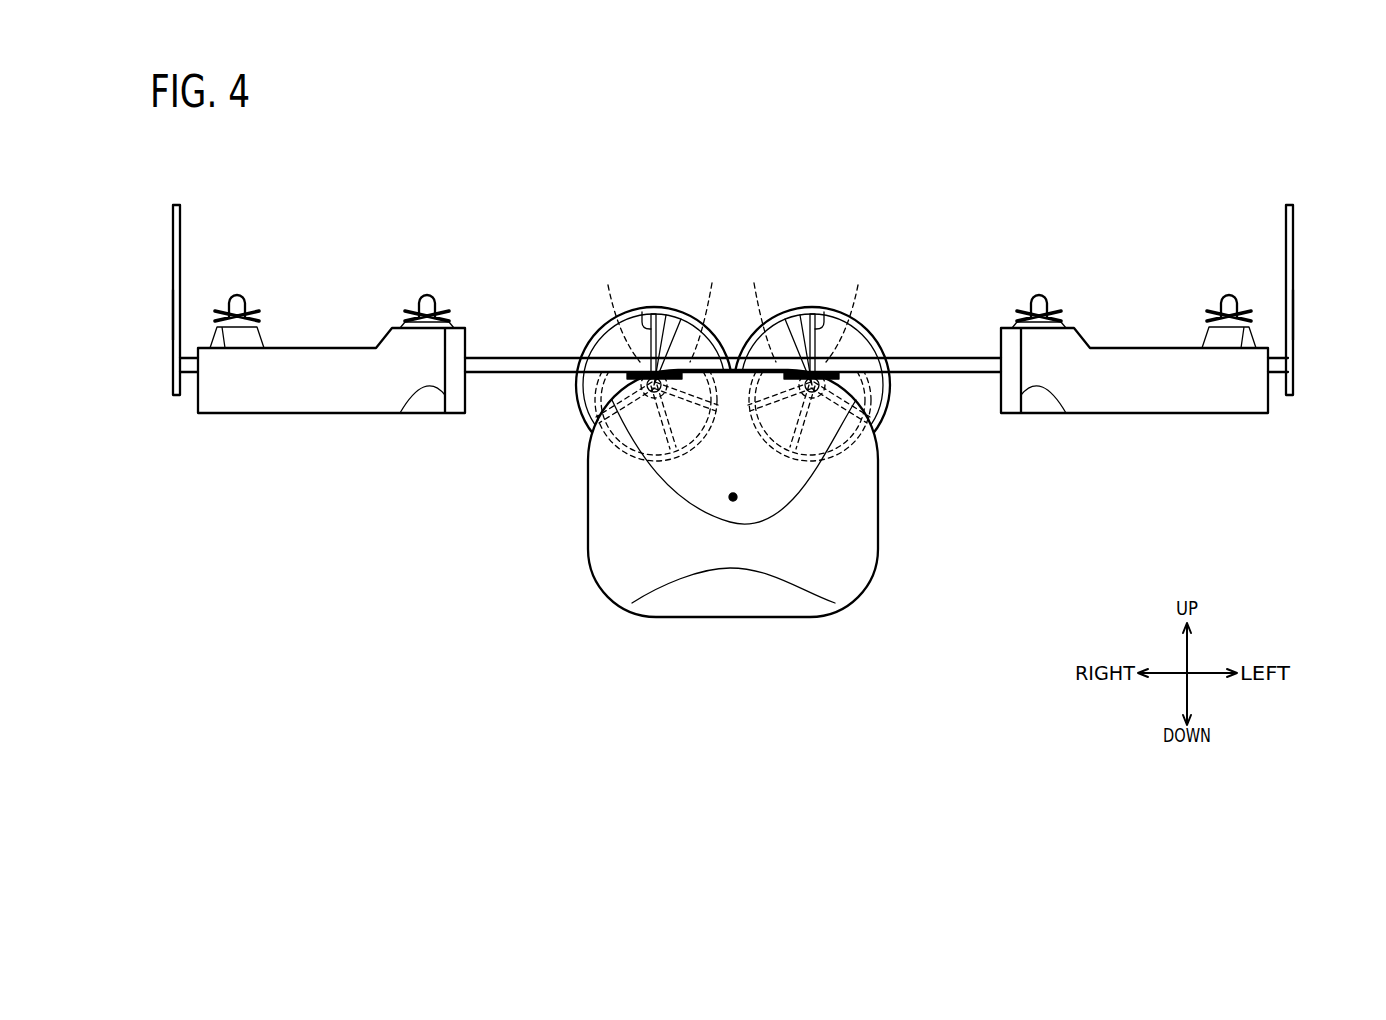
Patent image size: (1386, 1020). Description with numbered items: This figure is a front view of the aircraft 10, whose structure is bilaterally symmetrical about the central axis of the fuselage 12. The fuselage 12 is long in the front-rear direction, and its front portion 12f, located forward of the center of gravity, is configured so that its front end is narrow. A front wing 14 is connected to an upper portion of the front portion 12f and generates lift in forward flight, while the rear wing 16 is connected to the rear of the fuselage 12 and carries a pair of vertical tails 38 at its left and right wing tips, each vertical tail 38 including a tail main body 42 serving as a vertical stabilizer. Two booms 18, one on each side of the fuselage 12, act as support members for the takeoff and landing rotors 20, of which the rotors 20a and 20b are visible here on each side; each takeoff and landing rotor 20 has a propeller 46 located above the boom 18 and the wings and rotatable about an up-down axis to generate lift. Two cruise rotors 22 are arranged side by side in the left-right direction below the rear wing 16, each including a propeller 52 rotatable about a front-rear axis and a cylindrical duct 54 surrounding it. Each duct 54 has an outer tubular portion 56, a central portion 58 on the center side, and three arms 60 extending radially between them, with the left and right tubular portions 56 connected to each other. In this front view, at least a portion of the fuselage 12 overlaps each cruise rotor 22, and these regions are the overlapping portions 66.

The aircraft 10 is at (578, 180).
The fuselage 12 is at (726, 631).
The front portion 12f is at (815, 567).
The front wing 14 is at (520, 374).
The rear wing 16 is at (192, 387).
The boom 18 is at (360, 414).
The takeoff and landing rotor 20 is at (733, 279).
The takeoff and landing rotor 20a is at (1036, 275).
The takeoff and landing rotor 20b is at (245, 275).
The cruise rotor 22 is at (733, 359).
The vertical tail 38 is at (162, 256).
The tail main body 42 is at (173, 313).
The propeller 46 is at (258, 316).
The propeller 52 is at (598, 348).
The duct 54 is at (733, 304).
The tubular portion 56 is at (708, 258).
The central portion 58 is at (698, 310).
The arm 60 is at (641, 313).
The overlapping portion 66 is at (602, 464).